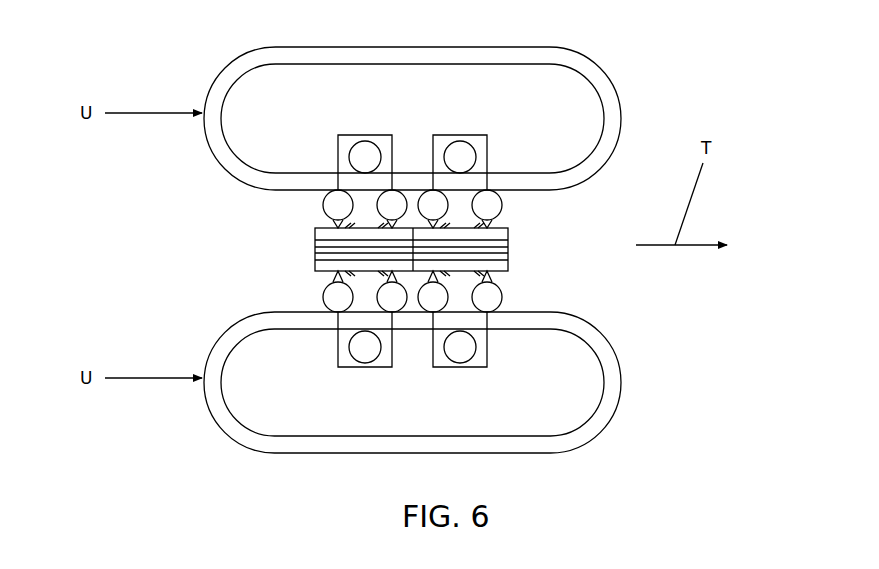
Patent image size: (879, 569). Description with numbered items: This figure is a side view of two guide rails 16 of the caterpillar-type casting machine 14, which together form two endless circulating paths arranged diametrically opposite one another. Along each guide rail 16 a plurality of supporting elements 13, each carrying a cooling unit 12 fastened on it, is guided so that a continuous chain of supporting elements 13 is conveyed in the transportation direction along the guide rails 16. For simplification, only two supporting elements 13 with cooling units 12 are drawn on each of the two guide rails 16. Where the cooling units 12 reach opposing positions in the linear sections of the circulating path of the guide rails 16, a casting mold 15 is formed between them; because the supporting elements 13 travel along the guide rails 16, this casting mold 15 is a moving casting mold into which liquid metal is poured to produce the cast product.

The cooling unit 12 is at (390, 249).
The supporting element 13 is at (441, 141).
The caterpillar-type casting machine 14 is at (309, 251).
The casting mold 15 is at (314, 252).
The guide rail 16 is at (604, 98).